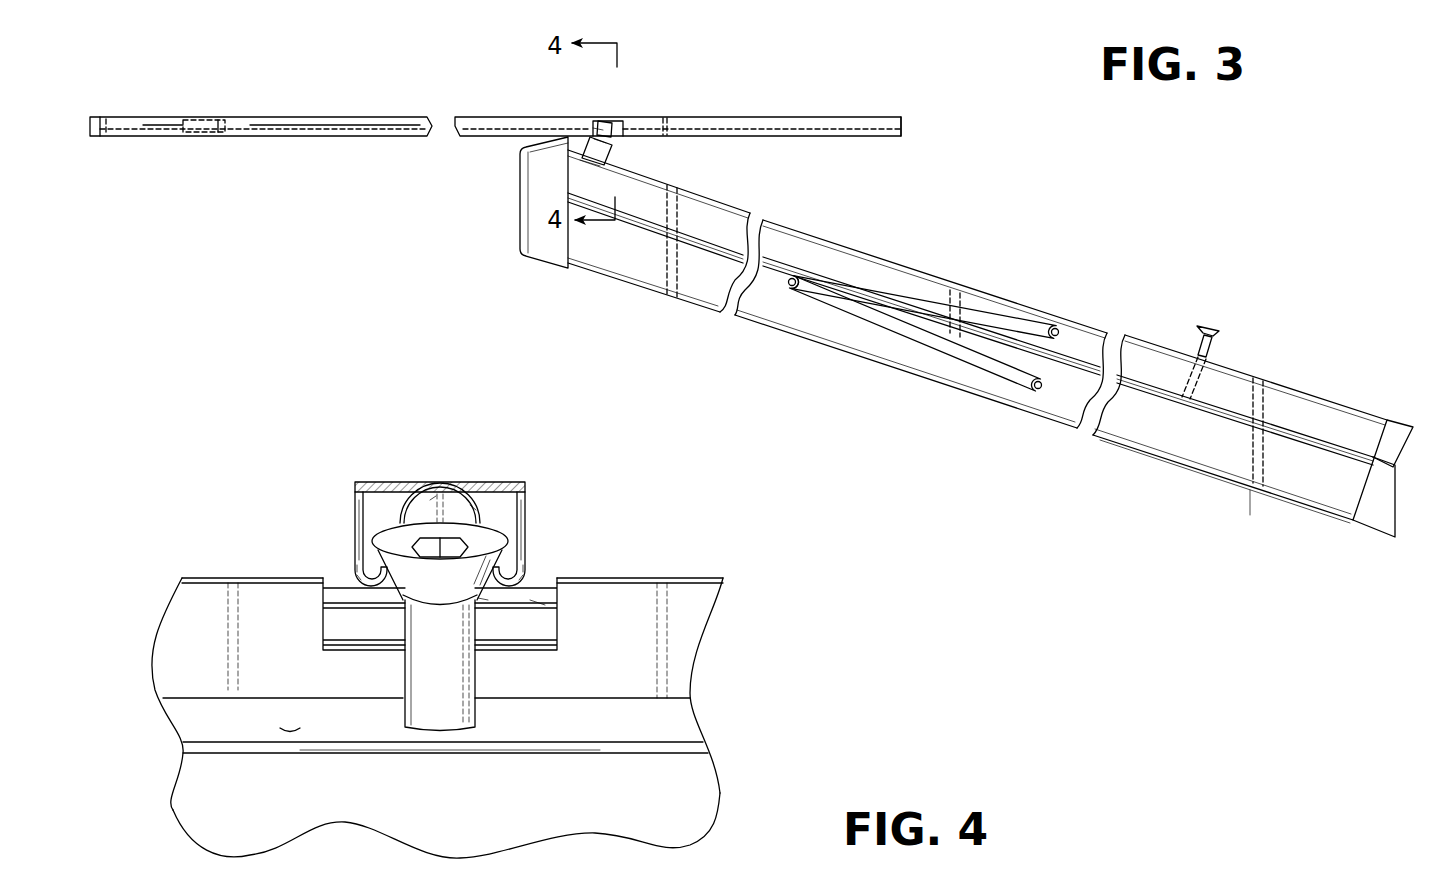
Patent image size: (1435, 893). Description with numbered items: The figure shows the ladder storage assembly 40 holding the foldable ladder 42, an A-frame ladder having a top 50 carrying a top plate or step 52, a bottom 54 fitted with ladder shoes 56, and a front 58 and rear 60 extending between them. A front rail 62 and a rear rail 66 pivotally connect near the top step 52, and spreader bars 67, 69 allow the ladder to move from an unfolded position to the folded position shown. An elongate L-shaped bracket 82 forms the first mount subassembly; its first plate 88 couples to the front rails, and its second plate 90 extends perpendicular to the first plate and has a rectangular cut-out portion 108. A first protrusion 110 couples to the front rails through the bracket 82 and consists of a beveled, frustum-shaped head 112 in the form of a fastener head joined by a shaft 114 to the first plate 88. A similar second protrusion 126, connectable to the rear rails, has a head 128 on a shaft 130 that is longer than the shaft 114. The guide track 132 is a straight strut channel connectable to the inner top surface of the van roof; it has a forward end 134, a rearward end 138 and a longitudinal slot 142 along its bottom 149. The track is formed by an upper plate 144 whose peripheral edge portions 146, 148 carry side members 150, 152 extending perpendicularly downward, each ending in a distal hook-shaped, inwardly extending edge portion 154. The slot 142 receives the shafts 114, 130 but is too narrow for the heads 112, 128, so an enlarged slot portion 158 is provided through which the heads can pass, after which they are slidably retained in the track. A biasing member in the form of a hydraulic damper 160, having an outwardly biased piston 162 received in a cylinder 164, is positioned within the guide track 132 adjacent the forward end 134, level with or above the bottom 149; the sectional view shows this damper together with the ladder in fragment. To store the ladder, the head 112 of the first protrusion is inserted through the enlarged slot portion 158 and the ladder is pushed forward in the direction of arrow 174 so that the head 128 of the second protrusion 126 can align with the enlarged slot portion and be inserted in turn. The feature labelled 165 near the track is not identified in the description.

In FIG. 3, the ladder storage assembly 40 is at (927, 330).
In FIG. 4, the ladder storage assembly 40 is at (445, 612).
In FIG. 3, the ladder 42 is at (1222, 483).
In FIG. 4, the ladder 42 is at (723, 793).
In FIG. 3, the top 50 is at (504, 224).
In FIG. 4, the top 50 is at (398, 563).
In FIG. 3, the top plate or step 52 is at (541, 240).
In FIG. 4, the top plate or step 52 is at (333, 598).
In FIG. 3, the bottom 54 is at (1398, 410).
In FIG. 3, the ladder shoes 56 is at (1375, 520).
In FIG. 3, the front 58 is at (927, 360).
In FIG. 4, the front 58 is at (449, 718).
In FIG. 3, the rear 60 is at (883, 372).
In FIG. 3, the front rail 62 is at (1295, 400).
In FIG. 3, the rear rail 66 is at (1285, 480).
In FIG. 3, the spreader bar 67 is at (1018, 325).
In FIG. 3, the spreader bar 69 is at (1000, 372).
In FIG. 3, the bracket 82 is at (597, 129).
In FIG. 4, the bracket 82 is at (339, 605).
In FIG. 4, the first plate 88 is at (293, 730).
In FIG. 4, the second plate 90 is at (290, 633).
In FIG. 4, the cut-out portion 108 is at (542, 610).
In FIG. 3, the first protrusion 110 is at (615, 143).
In FIG. 4, the first protrusion 110 is at (495, 540).
In FIG. 3, the head 112 is at (612, 118).
In FIG. 4, the head 112 is at (395, 482).
In FIG. 3, the shaft 114 is at (575, 147).
In FIG. 4, the shaft 114 is at (470, 682).
In FIG. 3, the second protrusion 126 is at (1211, 328).
In FIG. 3, the head 128 is at (1207, 323).
In FIG. 3, the shaft 130 is at (1197, 345).
In FIG. 3, the guide track 132 is at (330, 105).
In FIG. 4, the guide track 132 is at (462, 445).
In FIG. 3, the forward end 134 is at (93, 118).
In FIG. 3, the rearward end 138 is at (902, 117).
In FIG. 3, the slot 142 is at (143, 136).
In FIG. 4, the slot 142 is at (487, 592).
In FIG. 4, the upper plate 144 is at (437, 503).
In FIG. 4, the peripheral edge portion 146 is at (357, 512).
In FIG. 4, the peripheral edge portion 148 is at (527, 482).
In FIG. 3, the bottom 149 is at (305, 136).
In FIG. 4, the bottom 149 is at (522, 585).
In FIG. 4, the side member 150 is at (355, 522).
In FIG. 4, the side member 152 is at (522, 560).
In FIG. 4, the hook-shaped edge portion 154 is at (370, 592).
In FIG. 3, the enlarged slot portion 158 is at (600, 120).
In FIG. 4, the enlarged slot portion 158 is at (340, 575).
In FIG. 3, the hydraulic damper 160 is at (128, 105).
In FIG. 4, the hydraulic damper 160 is at (452, 482).
In FIG. 3, the piston 162 is at (222, 132).
In FIG. 4, the piston 162 is at (433, 490).
In FIG. 3, the cylinder 164 is at (110, 125).
In FIG. 3, the slot 165 is at (221, 125).
In FIG. 4, the slot 165 is at (493, 505).
In FIG. 3, the arrow 174 is at (795, 463).